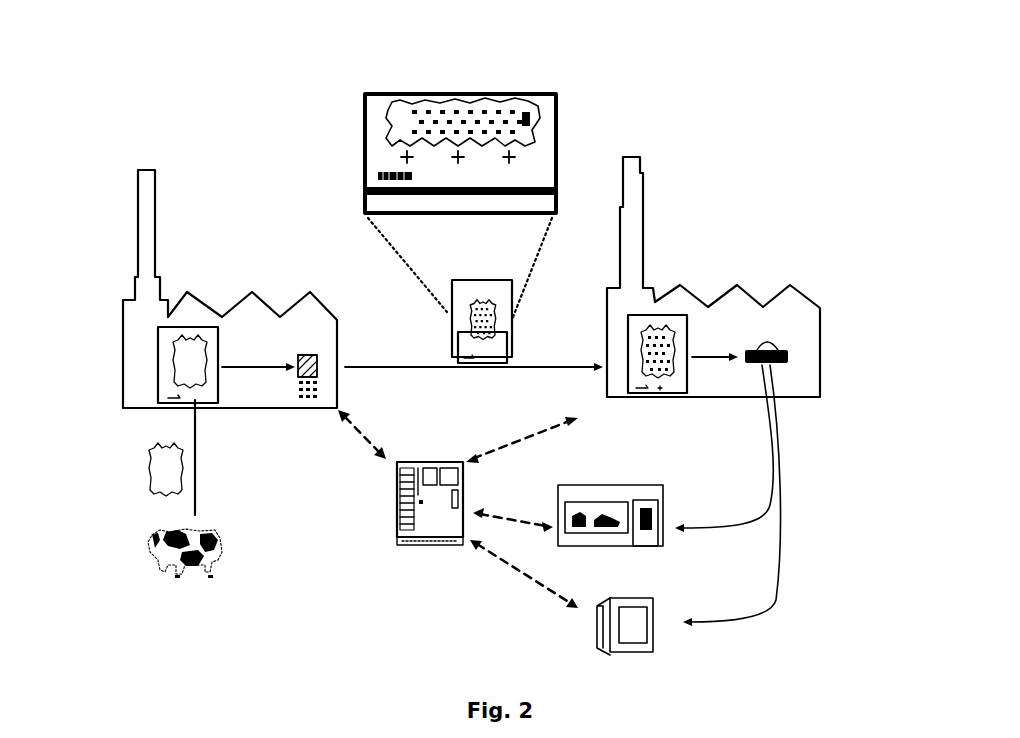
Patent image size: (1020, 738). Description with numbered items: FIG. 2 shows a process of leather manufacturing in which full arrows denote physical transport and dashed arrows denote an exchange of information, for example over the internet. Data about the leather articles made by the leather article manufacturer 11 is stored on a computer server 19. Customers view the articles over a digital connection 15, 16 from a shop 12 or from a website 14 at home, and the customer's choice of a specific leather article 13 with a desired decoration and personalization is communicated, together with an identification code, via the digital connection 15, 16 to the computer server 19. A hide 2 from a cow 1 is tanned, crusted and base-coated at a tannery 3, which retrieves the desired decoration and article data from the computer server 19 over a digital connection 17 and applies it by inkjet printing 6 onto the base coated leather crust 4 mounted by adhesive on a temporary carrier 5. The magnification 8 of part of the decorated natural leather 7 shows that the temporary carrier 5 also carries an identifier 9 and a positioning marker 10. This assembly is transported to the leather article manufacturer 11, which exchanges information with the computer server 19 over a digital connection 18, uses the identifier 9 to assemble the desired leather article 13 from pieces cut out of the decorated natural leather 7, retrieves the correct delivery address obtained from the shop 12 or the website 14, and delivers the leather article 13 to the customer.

The cow 1 is at (188, 571).
The hide 2 is at (160, 478).
The tannery 3 is at (228, 342).
The base coated leather crust 4 is at (185, 365).
The temporary carrier 5 is at (385, 107).
The inkjet printing 6 is at (308, 355).
The decorated natural leather 7 is at (520, 120).
The magnification of part of decorated natural leather 8 is at (367, 104).
The identifier 9 is at (370, 186).
The positioning marker 10 is at (407, 157).
The leather article manufacturer 11 is at (713, 277).
The shop 12 is at (568, 492).
The leather article 13 is at (786, 350).
The website 14 is at (602, 633).
The digital connection 15 is at (513, 513).
The digital connection 16 is at (524, 574).
The digital connection 17 is at (373, 434).
The digital connection 18 is at (522, 439).
The computer server 19 is at (428, 523).